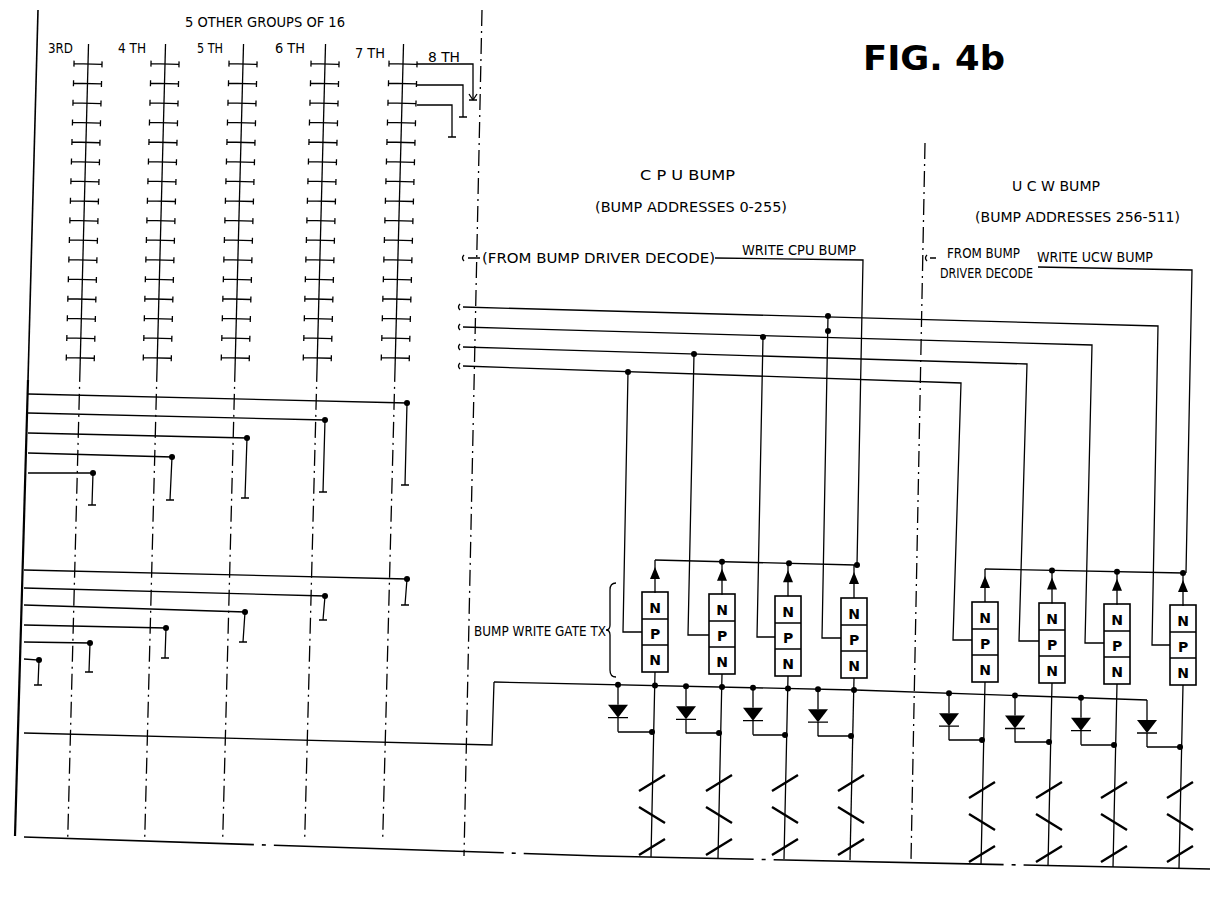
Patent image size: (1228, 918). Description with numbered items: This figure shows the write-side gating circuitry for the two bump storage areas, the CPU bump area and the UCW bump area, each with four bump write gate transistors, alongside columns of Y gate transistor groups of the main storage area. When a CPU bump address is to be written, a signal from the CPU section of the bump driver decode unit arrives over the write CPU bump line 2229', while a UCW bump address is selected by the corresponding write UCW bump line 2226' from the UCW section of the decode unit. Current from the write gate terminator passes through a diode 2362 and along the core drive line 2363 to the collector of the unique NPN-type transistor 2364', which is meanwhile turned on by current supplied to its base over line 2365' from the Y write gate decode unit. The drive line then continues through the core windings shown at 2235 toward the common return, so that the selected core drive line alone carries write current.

The NPN-type transistor 2364' is at (870, 621).
The diode 2362 is at (830, 711).
The core drive line 2363 is at (852, 763).
The core winding 2235 is at (855, 783).
The line 2229' is at (789, 413).
The line 2365' is at (800, 465).
The line 2226' is at (1115, 420).